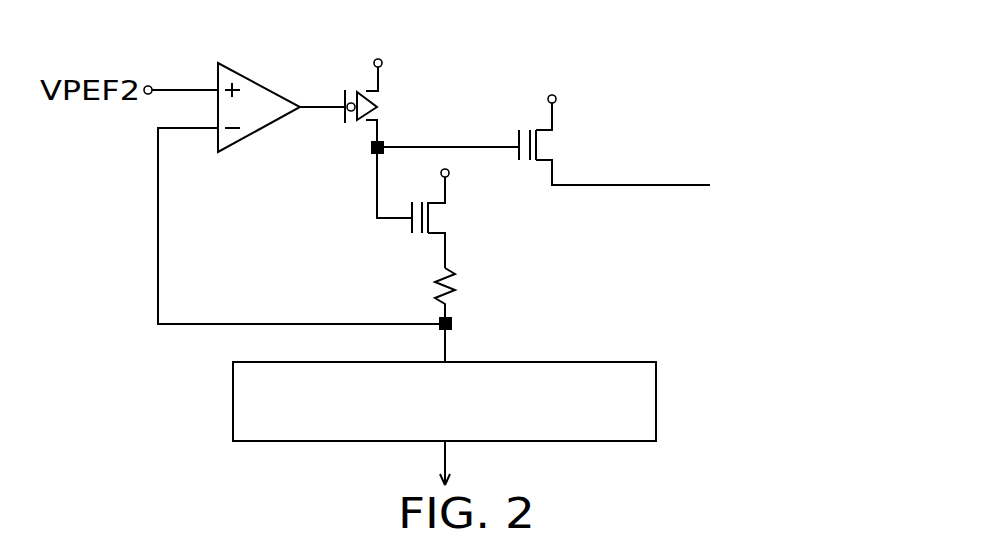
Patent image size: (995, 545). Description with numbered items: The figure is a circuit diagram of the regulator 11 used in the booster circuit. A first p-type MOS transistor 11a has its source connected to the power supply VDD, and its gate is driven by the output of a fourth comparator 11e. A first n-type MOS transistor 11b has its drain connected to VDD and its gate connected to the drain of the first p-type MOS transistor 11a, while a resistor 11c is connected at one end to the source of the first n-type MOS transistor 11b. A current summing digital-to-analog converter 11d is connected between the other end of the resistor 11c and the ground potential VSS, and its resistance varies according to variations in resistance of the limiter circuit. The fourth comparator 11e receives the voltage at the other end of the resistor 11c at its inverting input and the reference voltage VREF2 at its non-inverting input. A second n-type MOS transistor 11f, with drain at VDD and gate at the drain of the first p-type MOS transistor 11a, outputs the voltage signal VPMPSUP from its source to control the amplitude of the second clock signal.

The regulator 11 is at (714, 89).
The first p-type MOS transistor 11a is at (366, 90).
The first n-type MOS transistor 11b is at (428, 234).
The resistor 11c is at (456, 285).
The current summing digital-to-analog converter 11d is at (656, 400).
The fourth comparator 11e is at (259, 80).
The second n-type MOS transistor 11f is at (537, 130).